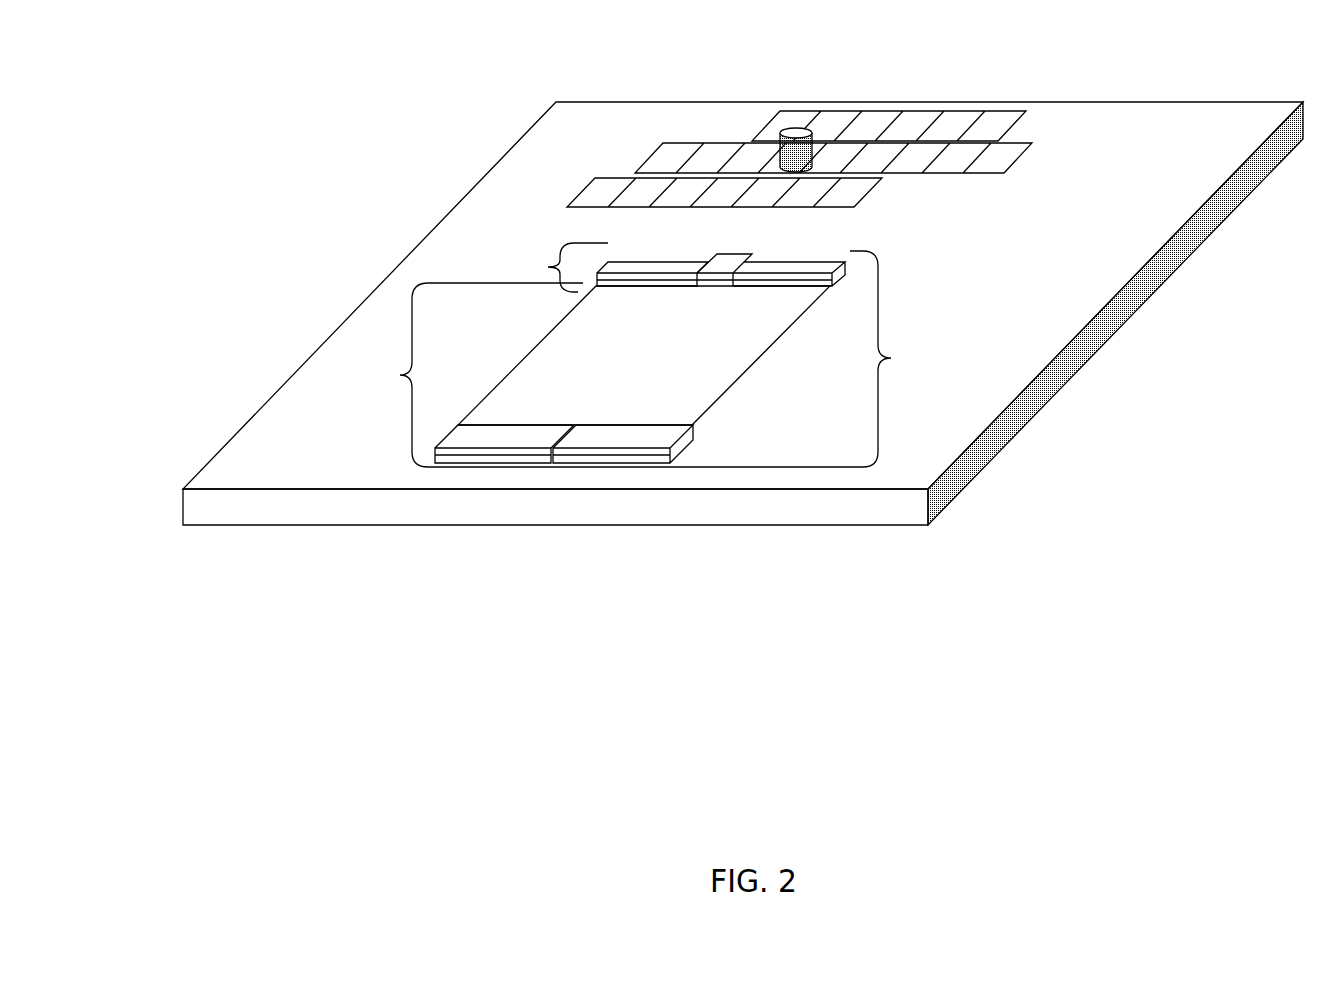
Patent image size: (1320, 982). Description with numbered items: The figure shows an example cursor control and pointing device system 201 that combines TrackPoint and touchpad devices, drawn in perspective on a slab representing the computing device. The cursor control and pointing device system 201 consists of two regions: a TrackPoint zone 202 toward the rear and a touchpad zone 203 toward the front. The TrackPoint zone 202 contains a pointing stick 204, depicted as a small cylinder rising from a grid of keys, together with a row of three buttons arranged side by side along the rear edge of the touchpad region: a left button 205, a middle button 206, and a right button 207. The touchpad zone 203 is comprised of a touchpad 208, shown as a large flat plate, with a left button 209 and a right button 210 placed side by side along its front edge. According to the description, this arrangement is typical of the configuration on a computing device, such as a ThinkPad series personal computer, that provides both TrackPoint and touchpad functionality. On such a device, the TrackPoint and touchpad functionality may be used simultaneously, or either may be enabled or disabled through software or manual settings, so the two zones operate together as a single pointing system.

The cursor control and pointing device system 201 is at (815, 160).
The TrackPoint zone 202 is at (593, 213).
The touchpad zone 203 is at (607, 375).
The pointing stick 204 is at (817, 140).
The left button 205 is at (657, 252).
The middle button 206 is at (715, 252).
The right button 207 is at (775, 256).
The touchpad 208 is at (537, 348).
The left button 209 is at (502, 467).
The right button 210 is at (633, 464).